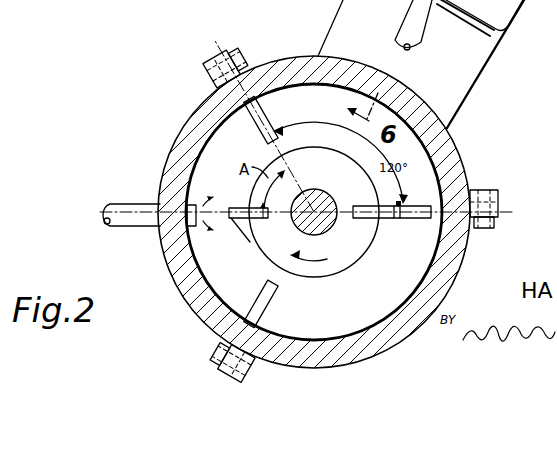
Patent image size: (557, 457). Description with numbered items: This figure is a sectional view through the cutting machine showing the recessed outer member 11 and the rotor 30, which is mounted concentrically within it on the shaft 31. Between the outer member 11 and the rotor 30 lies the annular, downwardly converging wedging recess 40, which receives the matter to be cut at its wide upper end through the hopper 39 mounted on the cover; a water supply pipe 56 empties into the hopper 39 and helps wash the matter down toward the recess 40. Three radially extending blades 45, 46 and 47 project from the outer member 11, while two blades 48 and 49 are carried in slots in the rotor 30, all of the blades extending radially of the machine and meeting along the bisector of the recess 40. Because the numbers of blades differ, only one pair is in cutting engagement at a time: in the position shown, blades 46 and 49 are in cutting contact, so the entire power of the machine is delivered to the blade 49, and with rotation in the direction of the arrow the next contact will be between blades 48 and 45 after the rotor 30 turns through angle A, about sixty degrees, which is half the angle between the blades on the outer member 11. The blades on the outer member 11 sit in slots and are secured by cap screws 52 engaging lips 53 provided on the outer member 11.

The outer member 11 is at (183, 153).
The rotor 30 is at (330, 277).
The shaft 31 is at (329, 227).
The hopper 39 is at (506, 21).
The recess 40 is at (420, 177).
The blade 45 is at (272, 119).
The blade 46 is at (423, 218).
The blade 47 is at (262, 306).
The blade 48 is at (231, 219).
The blade 49 is at (397, 219).
The cap screw 52 is at (491, 228).
The lip 53 is at (498, 195).
The water supply pipe 56 is at (420, 26).